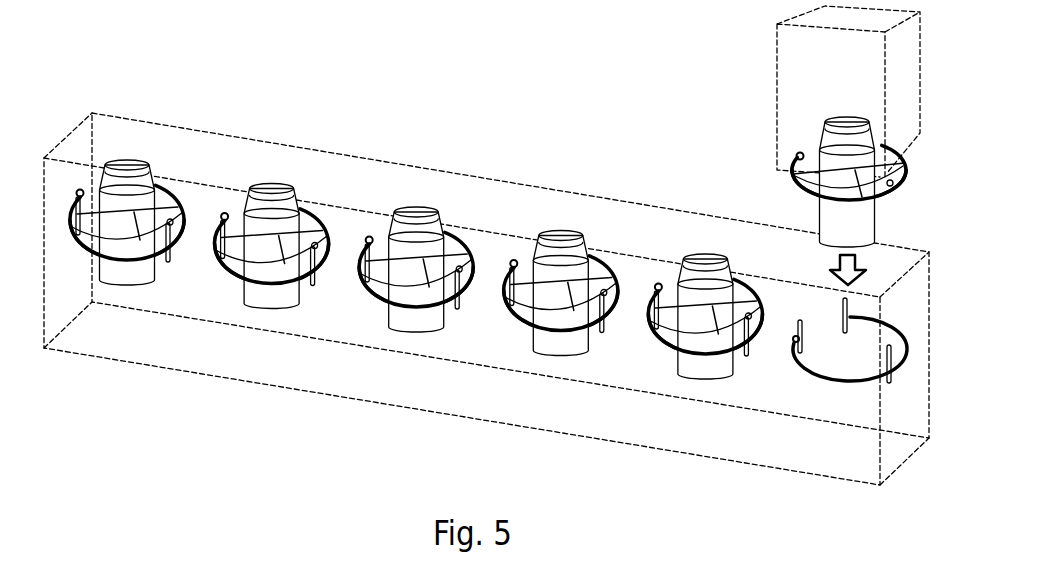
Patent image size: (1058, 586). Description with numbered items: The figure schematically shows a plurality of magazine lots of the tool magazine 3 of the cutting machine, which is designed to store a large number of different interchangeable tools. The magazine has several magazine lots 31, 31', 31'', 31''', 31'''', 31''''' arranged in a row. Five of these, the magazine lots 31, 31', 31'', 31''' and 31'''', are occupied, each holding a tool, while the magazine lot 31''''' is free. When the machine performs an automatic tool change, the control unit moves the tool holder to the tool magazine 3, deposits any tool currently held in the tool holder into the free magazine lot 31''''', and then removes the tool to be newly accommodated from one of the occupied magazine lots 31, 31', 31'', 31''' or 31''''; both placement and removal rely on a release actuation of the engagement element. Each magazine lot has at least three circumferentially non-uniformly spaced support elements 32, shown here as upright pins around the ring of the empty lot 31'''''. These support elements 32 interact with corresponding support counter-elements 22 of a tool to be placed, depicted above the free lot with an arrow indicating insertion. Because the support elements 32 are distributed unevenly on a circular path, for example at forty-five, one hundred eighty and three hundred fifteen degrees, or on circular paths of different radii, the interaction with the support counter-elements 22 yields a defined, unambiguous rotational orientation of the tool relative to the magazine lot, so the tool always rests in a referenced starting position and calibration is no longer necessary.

The tool magazine 3 is at (440, 170).
The support counter-elements 22 is at (795, 157).
The magazine lot 31 is at (127, 286).
The magazine lot 31' is at (272, 310).
The magazine lot 31'' is at (416, 333).
The magazine lot 31''' is at (561, 357).
The magazine lot 31'''' is at (705, 382).
The free magazine lot 31''''' is at (850, 427).
The support elements 32 is at (838, 308).